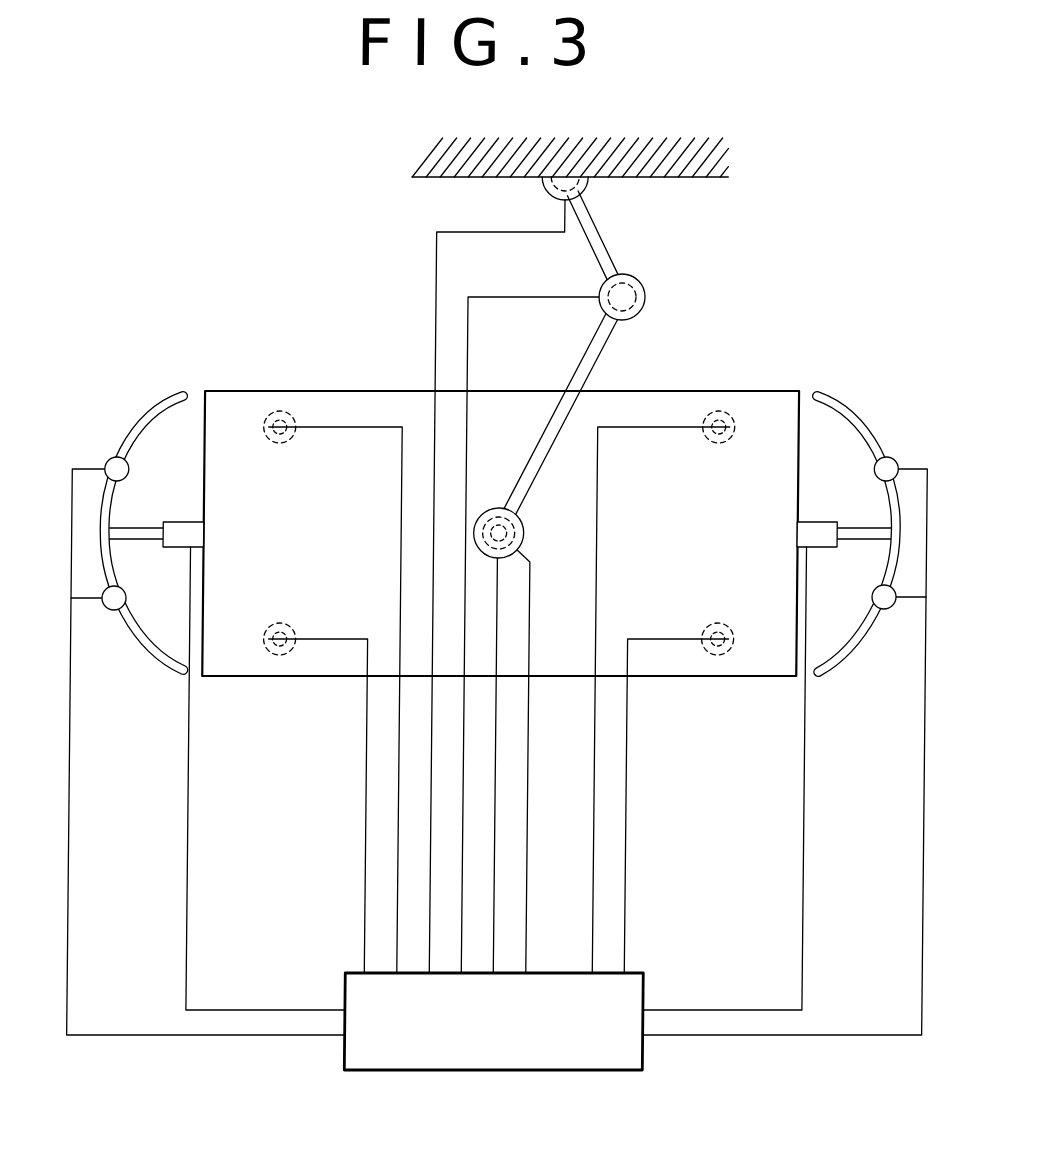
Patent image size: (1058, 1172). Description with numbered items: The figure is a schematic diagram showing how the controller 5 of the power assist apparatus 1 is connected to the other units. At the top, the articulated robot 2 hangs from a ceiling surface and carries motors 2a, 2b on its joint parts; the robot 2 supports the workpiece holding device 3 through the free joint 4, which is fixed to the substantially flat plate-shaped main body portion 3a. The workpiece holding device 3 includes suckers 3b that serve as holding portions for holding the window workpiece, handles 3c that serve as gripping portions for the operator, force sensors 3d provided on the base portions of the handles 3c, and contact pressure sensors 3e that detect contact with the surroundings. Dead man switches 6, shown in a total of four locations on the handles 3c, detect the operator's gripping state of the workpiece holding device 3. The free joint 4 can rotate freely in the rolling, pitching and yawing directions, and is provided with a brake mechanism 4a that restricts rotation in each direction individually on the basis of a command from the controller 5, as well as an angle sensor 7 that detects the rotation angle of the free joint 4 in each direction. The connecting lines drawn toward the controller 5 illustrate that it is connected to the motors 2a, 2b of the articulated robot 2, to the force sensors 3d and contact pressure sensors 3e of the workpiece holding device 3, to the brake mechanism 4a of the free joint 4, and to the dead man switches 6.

The power assist apparatus 1 is at (205, 218).
The articulated robot 2 is at (571, 345).
The motor 2a is at (577, 186).
The motor 2b is at (641, 297).
The workpiece holding device 3 is at (693, 715).
The main body portion 3a is at (368, 391).
The sucker 3b is at (277, 444).
The handle 3c is at (146, 400).
The force sensor 3d is at (178, 522).
The contact pressure sensor 3e is at (260, 427).
The free joint 4 is at (494, 508).
The brake mechanism 4a is at (521, 532).
The controller 5 is at (494, 1071).
The dead man switch 6 is at (105, 460).
The angle sensor 7 is at (516, 512).